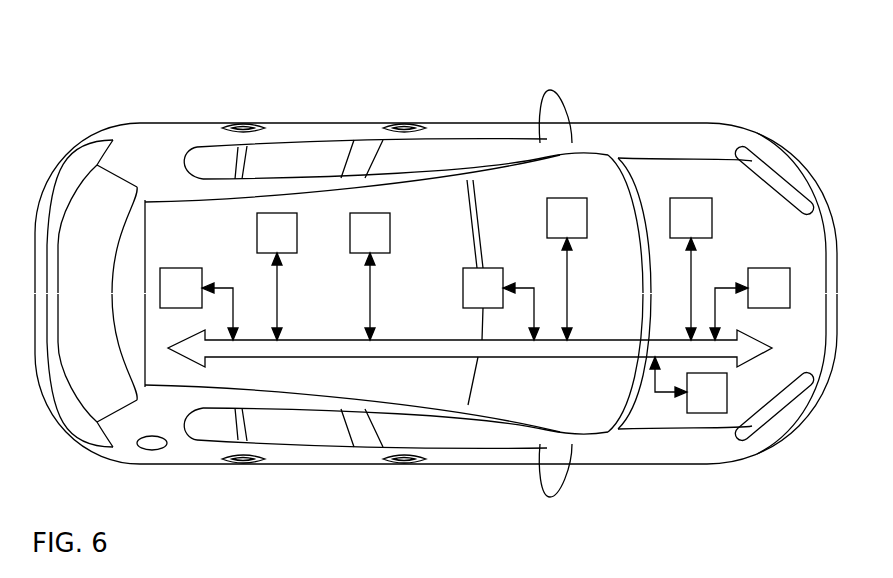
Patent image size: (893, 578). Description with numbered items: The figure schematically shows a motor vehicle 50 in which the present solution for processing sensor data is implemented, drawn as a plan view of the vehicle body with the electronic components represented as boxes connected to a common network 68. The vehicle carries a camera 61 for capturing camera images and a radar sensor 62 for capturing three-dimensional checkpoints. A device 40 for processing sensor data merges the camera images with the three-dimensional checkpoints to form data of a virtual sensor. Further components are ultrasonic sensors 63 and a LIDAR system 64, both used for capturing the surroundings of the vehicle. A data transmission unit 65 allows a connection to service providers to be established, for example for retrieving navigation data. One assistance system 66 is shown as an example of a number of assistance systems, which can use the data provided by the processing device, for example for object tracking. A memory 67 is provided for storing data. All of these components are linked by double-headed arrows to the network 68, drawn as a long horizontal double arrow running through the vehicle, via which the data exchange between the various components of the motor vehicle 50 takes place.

The motor vehicle 50 is at (702, 122).
The device for processing sensor data 40 is at (567, 198).
The camera 61 is at (477, 268).
The radar sensor 62 is at (768, 268).
The ultrasonic sensors 63 is at (708, 412).
The LIDAR system 64 is at (357, 215).
The data transmission unit 65 is at (265, 213).
The assistance system 66 is at (712, 217).
The memory 67 is at (178, 268).
The network 68 is at (303, 355).